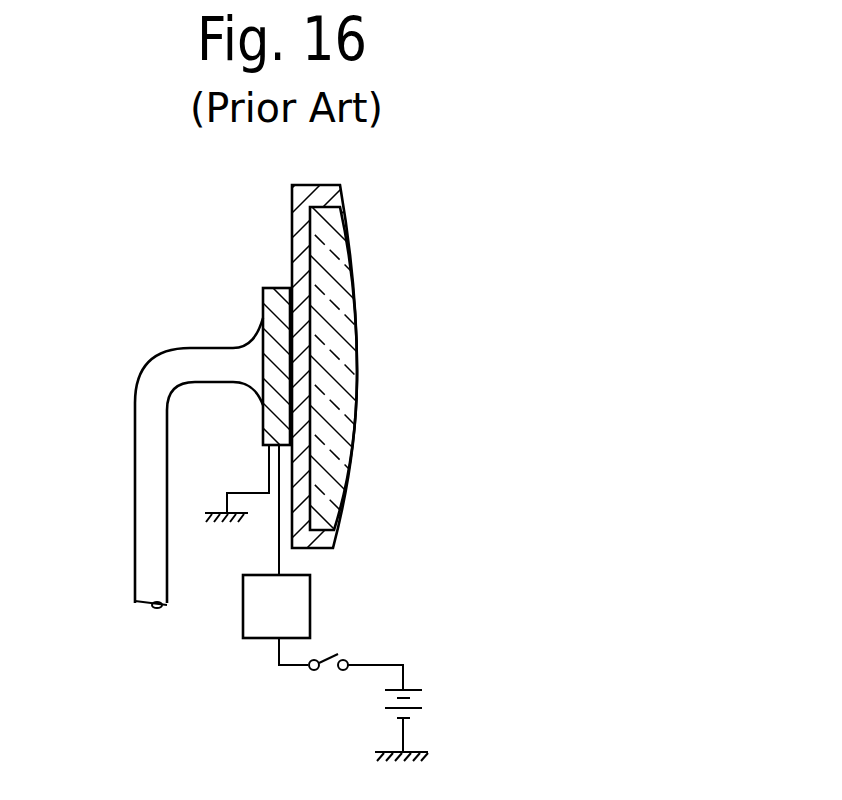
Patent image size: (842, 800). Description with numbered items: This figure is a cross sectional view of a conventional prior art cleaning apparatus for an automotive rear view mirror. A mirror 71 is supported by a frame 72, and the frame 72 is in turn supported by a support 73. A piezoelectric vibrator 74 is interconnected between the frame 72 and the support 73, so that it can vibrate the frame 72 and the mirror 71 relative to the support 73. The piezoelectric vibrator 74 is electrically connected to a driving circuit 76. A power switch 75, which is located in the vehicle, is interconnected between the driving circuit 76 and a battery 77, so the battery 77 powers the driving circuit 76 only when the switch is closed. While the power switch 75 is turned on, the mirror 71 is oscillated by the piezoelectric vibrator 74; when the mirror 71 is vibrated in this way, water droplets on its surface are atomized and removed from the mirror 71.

The mirror 71 is at (355, 351).
The frame 72 is at (345, 203).
The support 73 is at (140, 522).
The piezoelectric vibrator 74 is at (268, 312).
The power switch 75 is at (337, 652).
The driving circuit 76 is at (243, 636).
The battery 77 is at (427, 698).